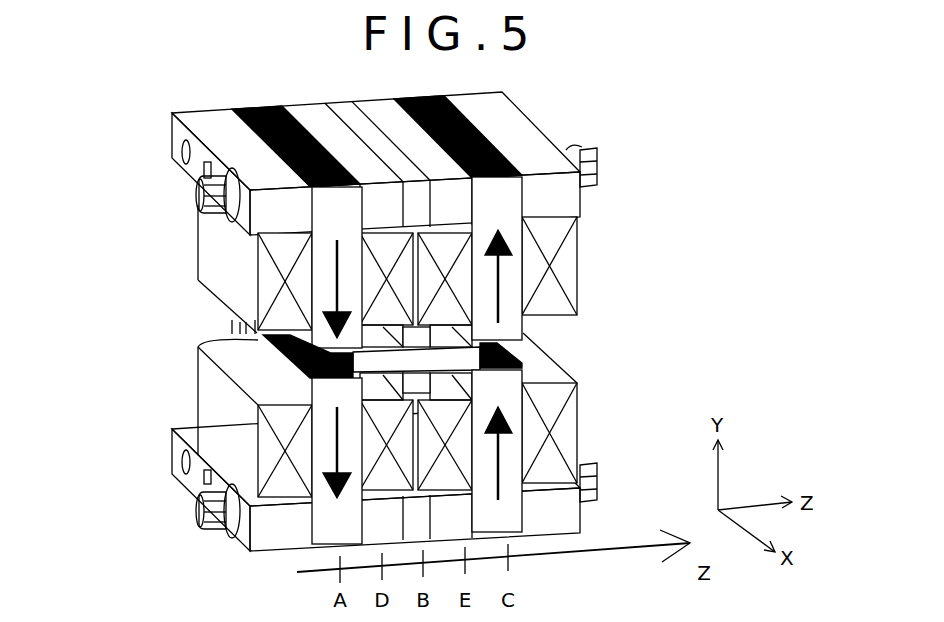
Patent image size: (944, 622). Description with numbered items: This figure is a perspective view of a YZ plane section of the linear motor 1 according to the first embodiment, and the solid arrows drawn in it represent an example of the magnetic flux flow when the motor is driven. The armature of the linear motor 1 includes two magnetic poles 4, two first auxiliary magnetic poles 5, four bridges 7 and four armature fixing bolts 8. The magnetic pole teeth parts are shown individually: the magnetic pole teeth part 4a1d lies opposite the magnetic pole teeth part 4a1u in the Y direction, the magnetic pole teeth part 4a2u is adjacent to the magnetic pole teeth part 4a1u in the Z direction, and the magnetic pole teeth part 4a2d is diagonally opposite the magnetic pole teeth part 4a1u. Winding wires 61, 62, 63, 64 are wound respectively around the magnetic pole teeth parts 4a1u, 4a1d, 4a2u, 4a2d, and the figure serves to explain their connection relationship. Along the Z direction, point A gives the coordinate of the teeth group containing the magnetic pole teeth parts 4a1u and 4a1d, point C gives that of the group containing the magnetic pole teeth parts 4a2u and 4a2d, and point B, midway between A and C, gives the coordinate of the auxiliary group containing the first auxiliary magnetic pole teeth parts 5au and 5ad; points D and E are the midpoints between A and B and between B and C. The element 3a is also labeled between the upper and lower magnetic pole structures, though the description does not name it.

The linear motor 1 is at (427, 339).
The mover plate 3a is at (463, 356).
The magnetic pole 4 is at (497, 510).
The magnetic pole teeth part 4a1u is at (323, 347).
The magnetic pole teeth part 4a1d is at (308, 380).
The magnetic pole teeth part 4a2u is at (510, 330).
The magnetic pole teeth part 4a2d is at (508, 375).
The first auxiliary magnetic pole 5 is at (423, 183).
The first auxiliary magnetic pole teeth part 5au is at (430, 322).
The first auxiliary magnetic pole teeth part 5ad is at (422, 385).
The bridge 7 is at (372, 108).
The armature fixing bolt 8 is at (197, 180).
The winding wire 61 is at (215, 257).
The winding wire 62 is at (208, 403).
The winding wire 63 is at (565, 252).
The winding wire 64 is at (567, 435).